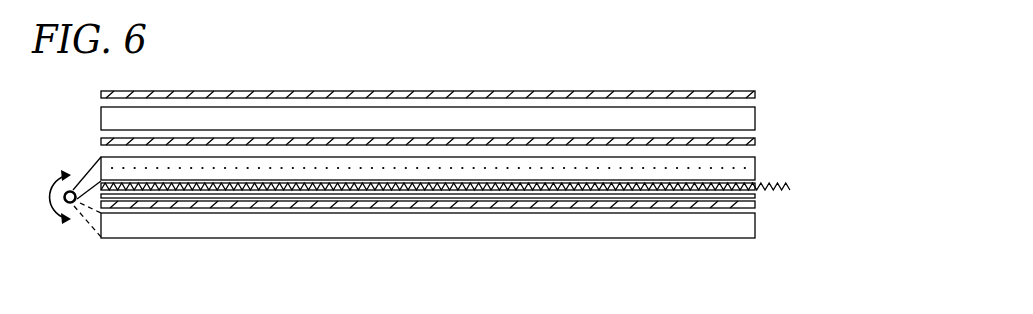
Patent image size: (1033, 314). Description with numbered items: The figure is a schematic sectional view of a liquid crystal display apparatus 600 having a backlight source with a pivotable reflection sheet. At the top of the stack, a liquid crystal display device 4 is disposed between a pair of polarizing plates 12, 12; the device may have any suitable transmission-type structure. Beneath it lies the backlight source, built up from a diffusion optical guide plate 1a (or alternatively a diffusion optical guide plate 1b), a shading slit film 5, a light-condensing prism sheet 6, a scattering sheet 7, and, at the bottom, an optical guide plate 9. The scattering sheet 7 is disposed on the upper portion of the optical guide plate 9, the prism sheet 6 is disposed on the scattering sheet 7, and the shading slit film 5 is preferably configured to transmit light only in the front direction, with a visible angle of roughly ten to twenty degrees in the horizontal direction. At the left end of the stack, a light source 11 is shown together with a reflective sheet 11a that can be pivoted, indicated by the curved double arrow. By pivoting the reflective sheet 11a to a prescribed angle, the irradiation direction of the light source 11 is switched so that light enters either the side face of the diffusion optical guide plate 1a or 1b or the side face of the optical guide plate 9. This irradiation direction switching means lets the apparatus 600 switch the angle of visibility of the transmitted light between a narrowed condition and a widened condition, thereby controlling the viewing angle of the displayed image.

The liquid crystal display apparatus 600 is at (824, 102).
The diffusion optical guide plate 1a is at (750, 162).
The diffusion optical guide plate 1b is at (465, 171).
The liquid crystal display device 4 is at (104, 123).
The shading slit film 5 is at (750, 163).
The light-condensing prism sheet 6 is at (756, 184).
The scattering sheet 7 is at (756, 198).
The optical guide plate 9 is at (756, 225).
The light source 11 is at (76, 220).
The reflective sheet 11a is at (84, 168).
The polarizing plate 12 is at (195, 93).